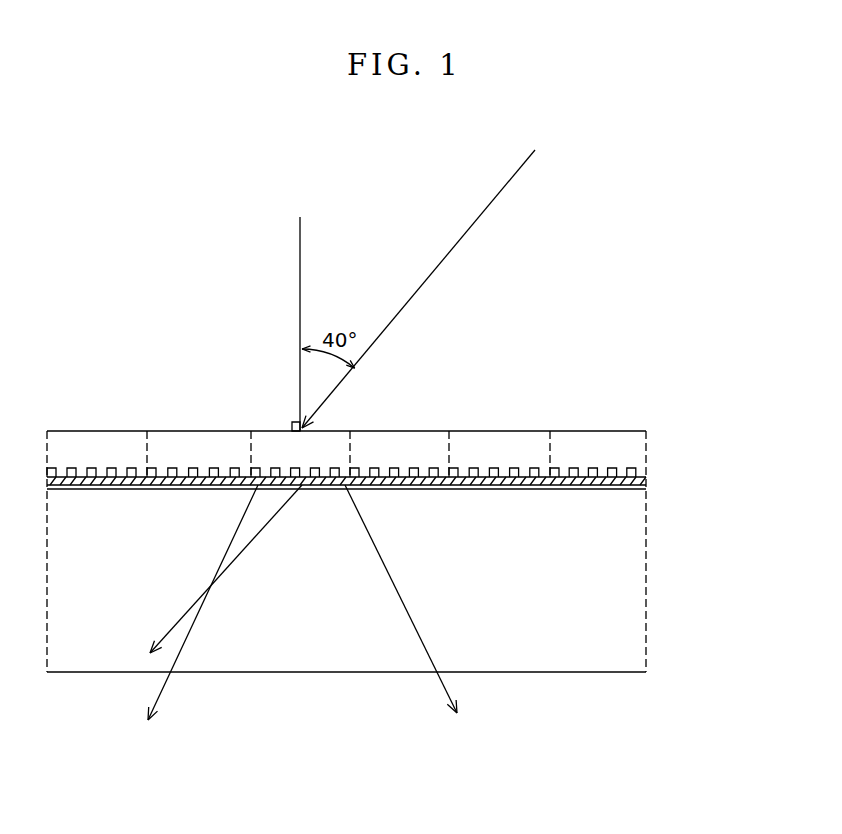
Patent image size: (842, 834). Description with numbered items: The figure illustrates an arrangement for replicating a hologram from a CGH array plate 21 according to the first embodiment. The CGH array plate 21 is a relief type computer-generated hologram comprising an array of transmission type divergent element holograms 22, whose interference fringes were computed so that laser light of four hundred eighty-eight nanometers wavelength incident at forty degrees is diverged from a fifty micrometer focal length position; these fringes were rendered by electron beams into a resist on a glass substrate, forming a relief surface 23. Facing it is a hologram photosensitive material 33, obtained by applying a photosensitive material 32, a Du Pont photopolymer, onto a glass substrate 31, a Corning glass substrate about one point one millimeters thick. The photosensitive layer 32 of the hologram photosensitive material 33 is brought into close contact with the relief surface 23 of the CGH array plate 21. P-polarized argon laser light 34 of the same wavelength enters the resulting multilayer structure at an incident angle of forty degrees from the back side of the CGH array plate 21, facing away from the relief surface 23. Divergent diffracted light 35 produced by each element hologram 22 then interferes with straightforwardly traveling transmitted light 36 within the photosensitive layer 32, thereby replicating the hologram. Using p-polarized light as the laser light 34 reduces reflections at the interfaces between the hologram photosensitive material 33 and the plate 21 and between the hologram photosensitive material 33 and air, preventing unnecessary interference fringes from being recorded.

The CGH array plate 21 is at (633, 453).
The element hologram 22 is at (330, 437).
The relief surface 23 is at (505, 468).
The glass substrate 31 is at (638, 602).
The photosensitive material 32 is at (646, 483).
The hologram photosensitive material 33 is at (716, 470).
The laser light 34 is at (483, 212).
The divergent diffracted light 35 is at (165, 688).
The transmitted light 36 is at (173, 628).